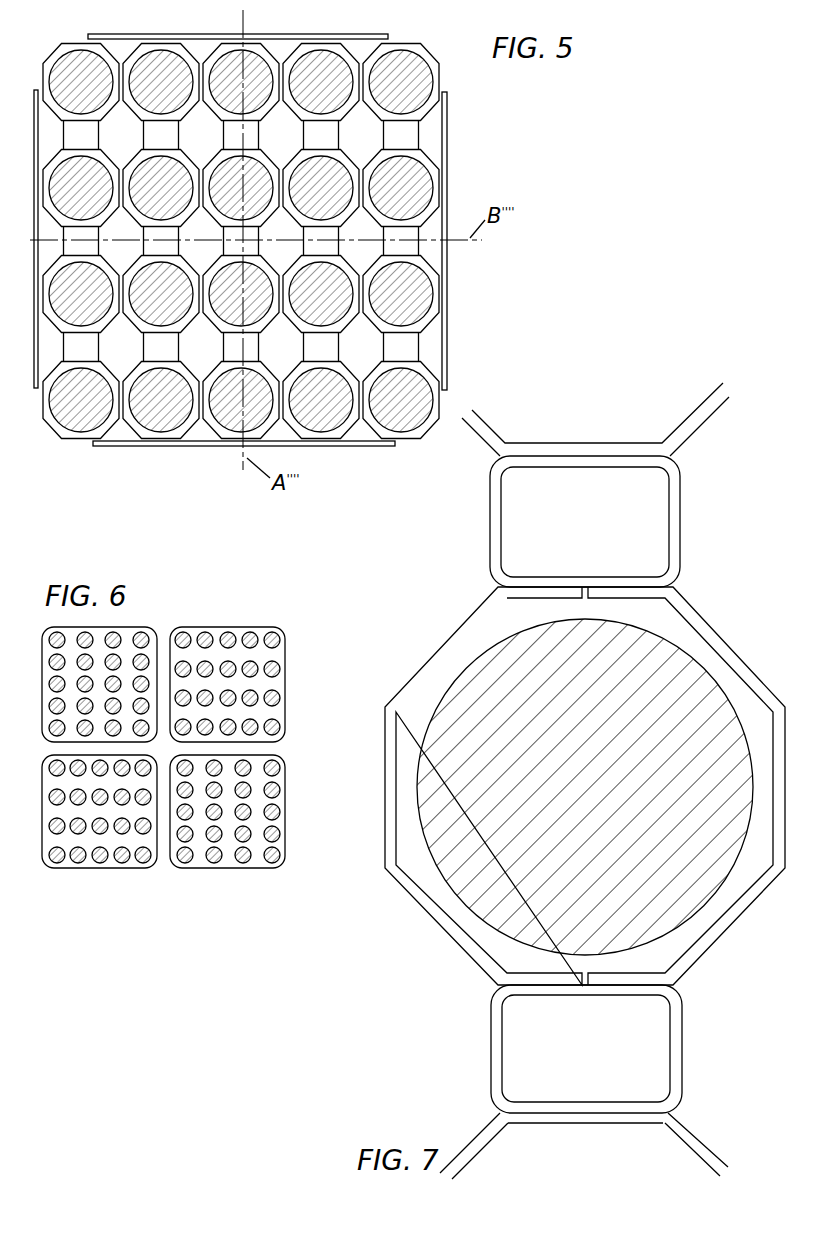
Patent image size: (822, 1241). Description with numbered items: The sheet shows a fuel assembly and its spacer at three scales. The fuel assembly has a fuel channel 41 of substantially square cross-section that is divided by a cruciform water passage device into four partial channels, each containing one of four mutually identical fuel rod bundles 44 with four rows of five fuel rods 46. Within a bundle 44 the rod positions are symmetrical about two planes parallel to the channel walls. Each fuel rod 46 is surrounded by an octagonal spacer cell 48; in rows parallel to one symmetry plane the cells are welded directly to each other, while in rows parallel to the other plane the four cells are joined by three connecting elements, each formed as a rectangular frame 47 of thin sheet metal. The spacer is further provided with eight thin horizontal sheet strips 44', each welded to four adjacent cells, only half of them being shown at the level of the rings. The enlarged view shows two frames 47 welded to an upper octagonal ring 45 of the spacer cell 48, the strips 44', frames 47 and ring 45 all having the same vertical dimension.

In FIG. 6, the fuel channel 41 is at (285, 788).
In FIG. 5, the fuel rod bundle 44 is at (284, 241).
In FIG. 5, the sheet strip 44' is at (238, 22).
In FIG. 7, the upper octagonal ring 45 is at (692, 423).
In FIG. 5, the fuel rod 46 is at (418, 297).
In FIG. 6, the fuel rod 46 is at (280, 834).
In FIG. 7, the fuel rod 46 is at (686, 893).
In FIG. 5, the rectangular frame 47 is at (417, 133).
In FIG. 7, the rectangular frame 47 is at (680, 527).
In FIG. 5, the octagonal spacer cell 48 is at (246, 468).